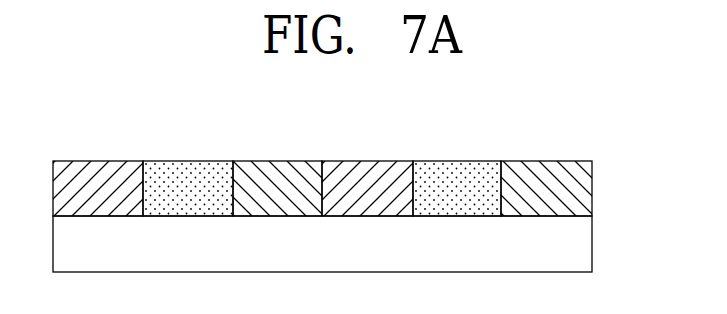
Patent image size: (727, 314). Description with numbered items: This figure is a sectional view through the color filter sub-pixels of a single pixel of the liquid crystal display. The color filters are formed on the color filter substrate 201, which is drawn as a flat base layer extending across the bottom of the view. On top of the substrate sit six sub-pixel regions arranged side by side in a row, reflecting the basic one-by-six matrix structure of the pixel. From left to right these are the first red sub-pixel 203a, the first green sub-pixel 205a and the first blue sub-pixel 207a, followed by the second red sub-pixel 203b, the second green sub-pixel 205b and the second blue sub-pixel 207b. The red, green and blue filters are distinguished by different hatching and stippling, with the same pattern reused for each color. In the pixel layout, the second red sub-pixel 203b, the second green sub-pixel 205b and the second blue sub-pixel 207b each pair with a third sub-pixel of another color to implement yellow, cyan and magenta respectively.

The color filter substrate 201 is at (582, 239).
The first red sub-pixel 203a is at (95, 161).
The first green sub-pixel 205a is at (184, 164).
The first blue sub-pixel 207a is at (275, 161).
The second red sub-pixel 203b is at (365, 161).
The second green sub-pixel 205b is at (452, 164).
The second blue sub-pixel 207b is at (541, 161).